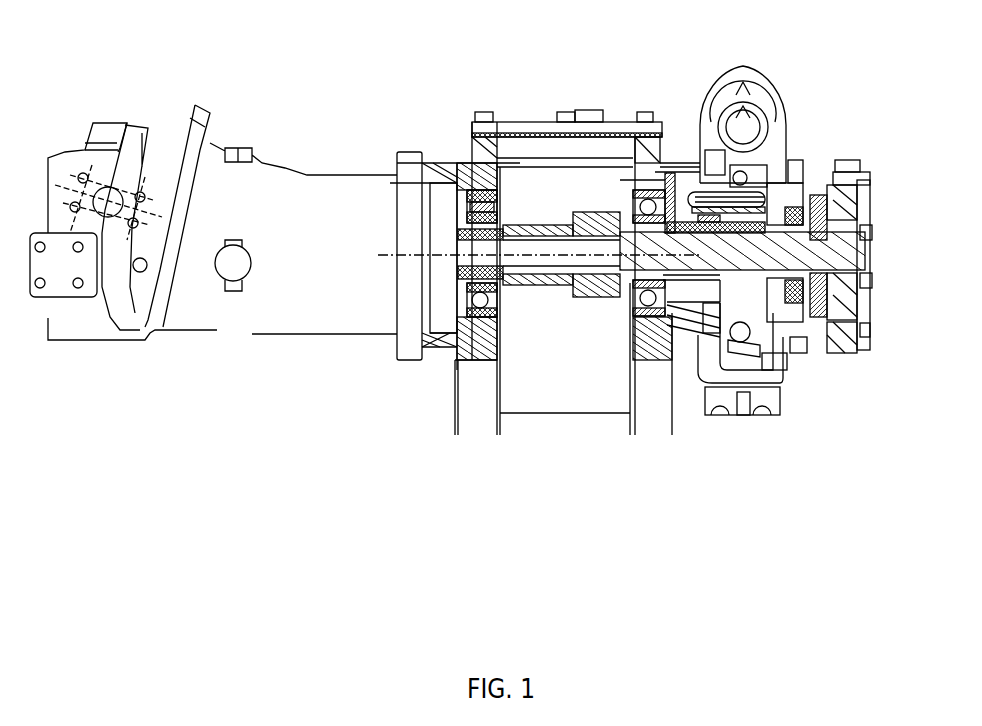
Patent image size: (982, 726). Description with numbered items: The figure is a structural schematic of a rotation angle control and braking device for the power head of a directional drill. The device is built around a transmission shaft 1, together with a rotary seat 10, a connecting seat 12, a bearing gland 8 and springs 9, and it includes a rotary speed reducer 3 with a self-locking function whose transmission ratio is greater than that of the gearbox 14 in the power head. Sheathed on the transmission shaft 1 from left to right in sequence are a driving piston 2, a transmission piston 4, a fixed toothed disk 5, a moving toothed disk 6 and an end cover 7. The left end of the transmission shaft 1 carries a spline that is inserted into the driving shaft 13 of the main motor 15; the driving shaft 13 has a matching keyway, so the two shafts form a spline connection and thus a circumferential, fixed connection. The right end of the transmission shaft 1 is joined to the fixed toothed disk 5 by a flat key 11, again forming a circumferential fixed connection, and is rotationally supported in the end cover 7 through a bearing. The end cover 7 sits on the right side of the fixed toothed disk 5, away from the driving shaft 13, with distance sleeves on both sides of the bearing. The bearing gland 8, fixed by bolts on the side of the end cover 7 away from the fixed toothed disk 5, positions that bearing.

The transmission shaft 1 is at (634, 192).
The driving piston 2 is at (684, 200).
The rotary speed reducer 3 is at (712, 118).
The transmission piston 4 is at (768, 195).
The fixed toothed disk 5 is at (793, 205).
The moving toothed disk 6 is at (817, 190).
The end cover 7 is at (866, 178).
The bearing gland 8 is at (870, 210).
The spring 9 is at (862, 285).
The rotary seat 10 is at (862, 347).
The flat key 11 is at (798, 287).
The connecting seat 12 is at (667, 313).
The driving shaft 13 is at (535, 220).
The gearbox 14 is at (460, 163).
The main motor 15 is at (366, 175).